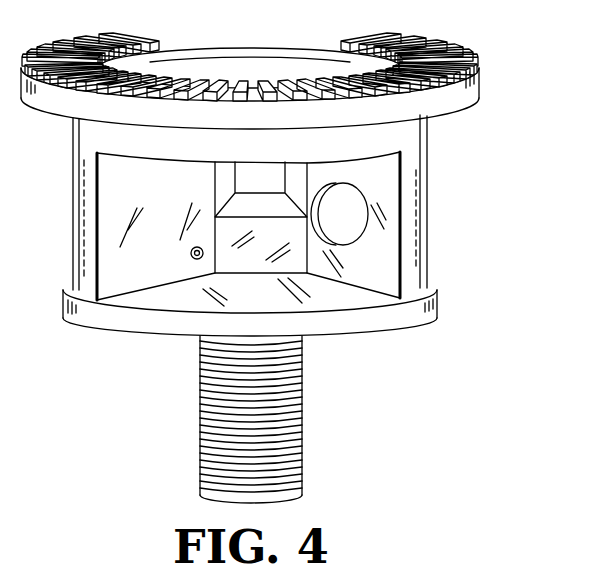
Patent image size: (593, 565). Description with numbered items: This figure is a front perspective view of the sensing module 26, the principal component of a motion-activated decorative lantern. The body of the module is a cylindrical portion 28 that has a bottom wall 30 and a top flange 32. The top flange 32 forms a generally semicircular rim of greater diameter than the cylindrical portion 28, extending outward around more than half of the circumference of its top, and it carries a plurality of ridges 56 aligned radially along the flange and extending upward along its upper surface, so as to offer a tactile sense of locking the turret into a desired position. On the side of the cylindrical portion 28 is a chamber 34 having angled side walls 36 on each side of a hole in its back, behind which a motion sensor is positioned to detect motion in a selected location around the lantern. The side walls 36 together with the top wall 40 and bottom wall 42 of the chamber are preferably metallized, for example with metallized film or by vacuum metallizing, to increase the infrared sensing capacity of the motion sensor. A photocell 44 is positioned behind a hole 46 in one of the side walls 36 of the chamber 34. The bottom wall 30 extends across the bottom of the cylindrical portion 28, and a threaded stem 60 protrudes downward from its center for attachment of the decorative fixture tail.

The sensing module 26 is at (474, 191).
The cylindrical portion 28 is at (88, 263).
The bottom wall 30 is at (440, 310).
The top flange 32 is at (280, 70).
The chamber 34 is at (157, 258).
The angled side walls 36 is at (116, 217).
The top wall 40 is at (183, 158).
The bottom wall of the chamber 42 is at (328, 300).
The photocell 44 is at (351, 220).
The hole 46 is at (360, 202).
The ridges 56 is at (296, 96).
The threaded stem 60 is at (302, 455).